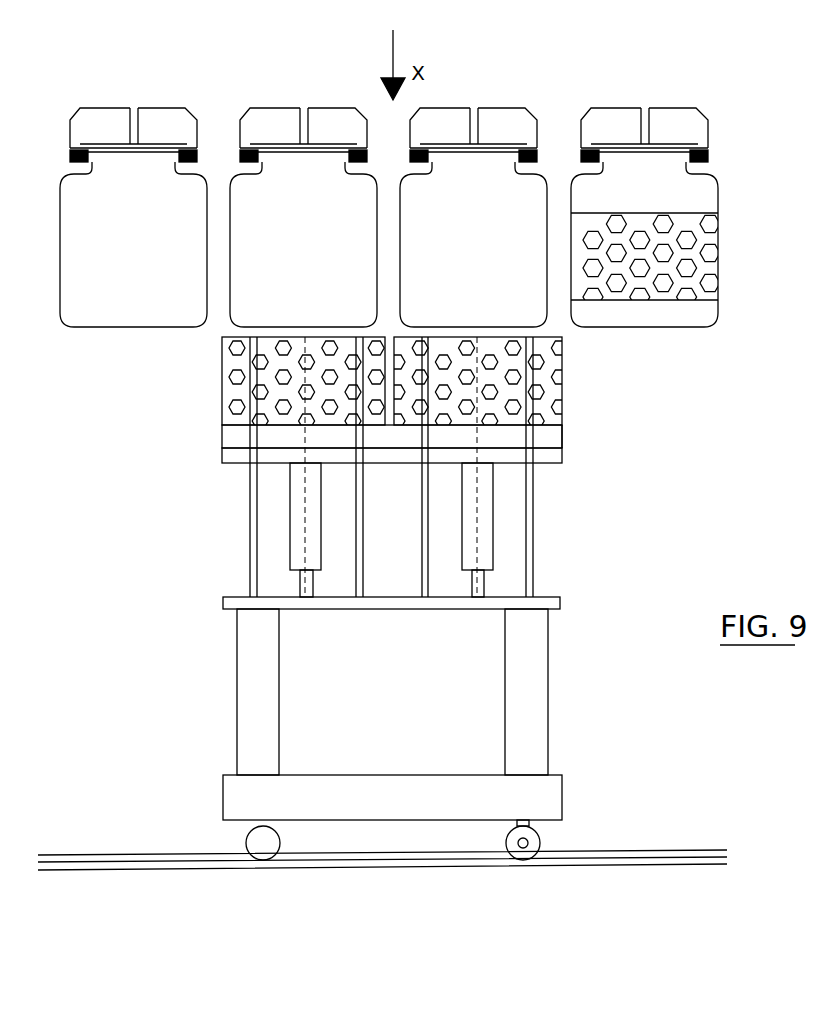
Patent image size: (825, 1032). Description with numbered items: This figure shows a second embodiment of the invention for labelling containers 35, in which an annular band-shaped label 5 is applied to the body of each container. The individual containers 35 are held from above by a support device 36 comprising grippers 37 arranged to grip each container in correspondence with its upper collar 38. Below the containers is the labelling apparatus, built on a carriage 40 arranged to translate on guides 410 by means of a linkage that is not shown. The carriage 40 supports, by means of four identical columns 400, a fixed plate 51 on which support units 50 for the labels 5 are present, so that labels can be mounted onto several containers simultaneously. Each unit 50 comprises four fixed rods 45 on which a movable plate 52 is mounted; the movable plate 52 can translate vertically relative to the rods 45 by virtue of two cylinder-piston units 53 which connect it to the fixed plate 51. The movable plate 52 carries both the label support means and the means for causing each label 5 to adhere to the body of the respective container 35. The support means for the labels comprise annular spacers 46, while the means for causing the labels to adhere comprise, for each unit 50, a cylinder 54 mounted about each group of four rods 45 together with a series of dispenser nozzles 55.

The label 5 is at (712, 228).
The container 35 is at (147, 267).
The support device 36 is at (364, 100).
The gripper 37 is at (156, 118).
The upper collar 38 is at (130, 108).
The carriage 40 is at (537, 790).
The fixed rod 45 is at (250, 533).
The annular spacer 46 is at (222, 437).
The support unit 50 is at (238, 582).
The fixed plate 51 is at (333, 604).
The movable plate 52 is at (222, 460).
The cylinder-piston unit 53 is at (482, 562).
The cylinder 54 is at (222, 343).
The dispenser nozzle 55 is at (558, 428).
The column 400 is at (245, 738).
The guide 410 is at (547, 863).